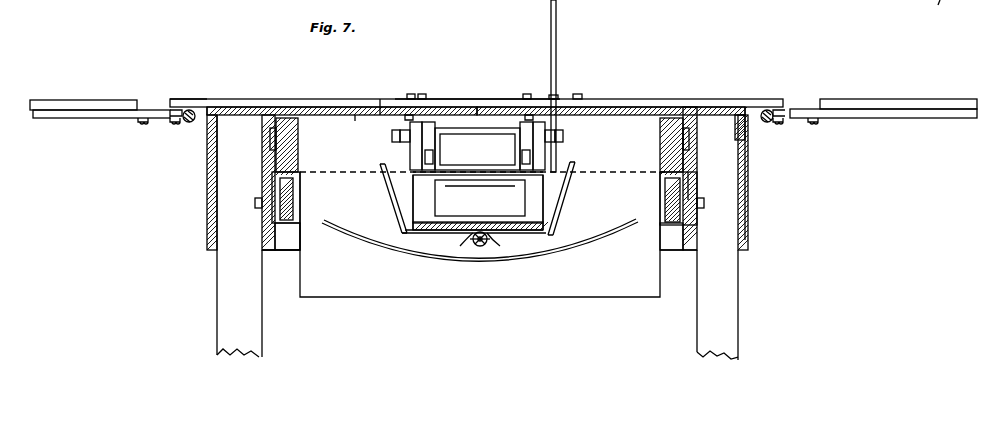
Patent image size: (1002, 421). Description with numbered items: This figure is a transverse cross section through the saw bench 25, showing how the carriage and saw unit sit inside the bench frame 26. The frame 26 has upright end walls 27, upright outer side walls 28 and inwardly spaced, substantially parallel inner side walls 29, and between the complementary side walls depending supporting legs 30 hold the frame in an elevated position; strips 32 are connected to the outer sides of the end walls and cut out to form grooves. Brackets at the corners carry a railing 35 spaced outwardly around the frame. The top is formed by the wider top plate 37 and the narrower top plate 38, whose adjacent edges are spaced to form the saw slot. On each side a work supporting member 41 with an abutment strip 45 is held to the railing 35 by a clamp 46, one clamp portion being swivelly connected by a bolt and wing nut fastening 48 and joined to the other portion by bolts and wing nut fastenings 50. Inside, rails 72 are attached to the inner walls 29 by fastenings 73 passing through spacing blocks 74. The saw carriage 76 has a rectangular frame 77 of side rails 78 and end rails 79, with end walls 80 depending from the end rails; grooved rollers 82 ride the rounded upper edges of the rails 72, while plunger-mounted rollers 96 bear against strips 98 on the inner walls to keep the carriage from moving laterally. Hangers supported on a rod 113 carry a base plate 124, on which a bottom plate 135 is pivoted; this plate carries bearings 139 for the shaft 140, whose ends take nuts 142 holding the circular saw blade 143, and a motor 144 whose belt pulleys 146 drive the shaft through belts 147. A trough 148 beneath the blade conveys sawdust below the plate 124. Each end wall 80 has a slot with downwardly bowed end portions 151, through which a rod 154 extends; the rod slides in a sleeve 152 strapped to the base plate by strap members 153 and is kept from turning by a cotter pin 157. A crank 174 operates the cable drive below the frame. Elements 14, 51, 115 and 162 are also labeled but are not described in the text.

The bracket 14 is at (678, 250).
The saw bench 25 is at (254, 99).
The frame 26 is at (205, 157).
The end walls 27 is at (282, 252).
The outer side walls 28 is at (210, 215).
The inner side walls 29 is at (262, 252).
The supporting legs 30 is at (717, 305).
The strips 32 is at (207, 107).
The railing 35 is at (192, 110).
The top plate 37 is at (230, 107).
The top plate 38 is at (665, 98).
The work supporting member 41 is at (52, 120).
The abutment strip 45 is at (68, 100).
The clamp 46 is at (166, 128).
The bolt and wing nut fastening 48 is at (143, 100).
The bolts and wing nut fastenings 50 is at (175, 128).
The top plate 51 is at (425, 99).
The rails 72 is at (292, 218).
The fastenings 73 is at (255, 203).
The spacing blocks 74 is at (262, 232).
The saw carriage 76 is at (390, 107).
The frame 77 is at (340, 107).
The side rails 78 is at (310, 126).
The end rails 79 is at (178, 108).
The end walls 80 is at (535, 297).
The rollers 82 is at (690, 186).
The roller 96 is at (298, 140).
The strips 98 is at (270, 142).
The rod 113 is at (513, 94).
The bar 115 is at (455, 99).
The base plate 124 is at (472, 219).
The bottom plate 135 is at (480, 201).
The bearing 139 is at (436, 99).
The shaft 140 is at (392, 136).
The nuts 142 is at (608, 99).
The circular saw blade 143 is at (558, 92).
The motor 144 is at (477, 149).
The belt pulley 146 is at (410, 150).
The belts 147 is at (400, 158).
The trough 148 is at (380, 180).
The end portions 151 is at (365, 250).
The sleeve 152 is at (481, 248).
The strap members 153 is at (462, 248).
The rod 154 is at (475, 245).
The cotter pin 157 is at (498, 248).
The rod 162 is at (558, 60).
The crank 174 is at (947, 11).